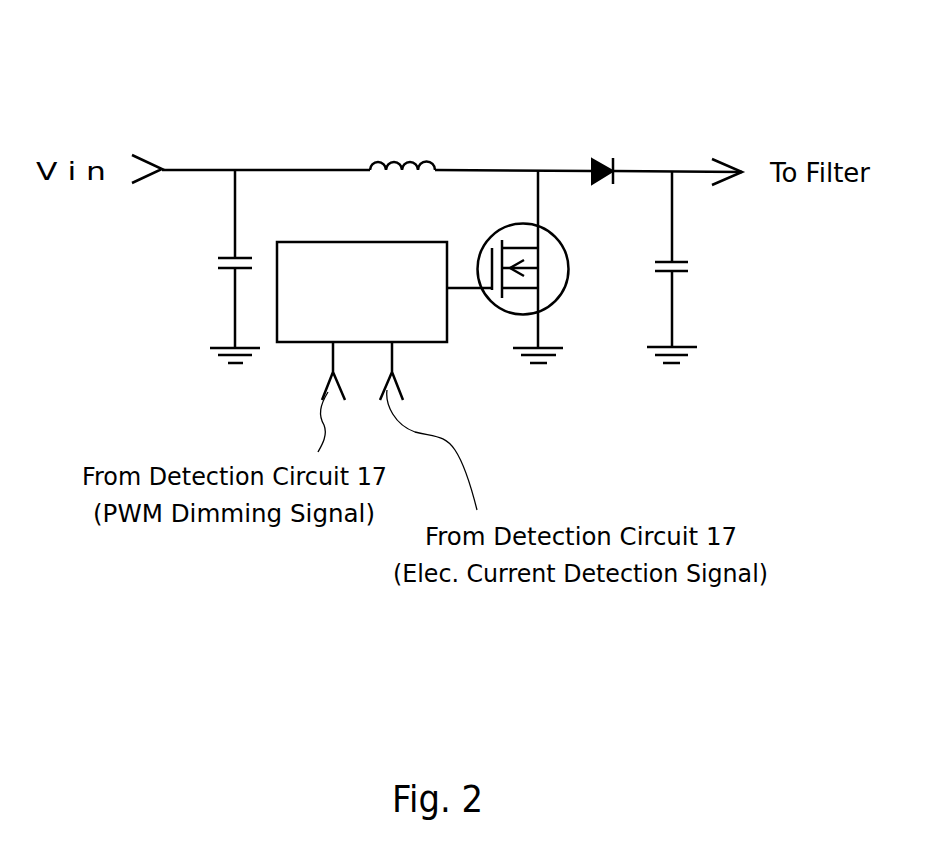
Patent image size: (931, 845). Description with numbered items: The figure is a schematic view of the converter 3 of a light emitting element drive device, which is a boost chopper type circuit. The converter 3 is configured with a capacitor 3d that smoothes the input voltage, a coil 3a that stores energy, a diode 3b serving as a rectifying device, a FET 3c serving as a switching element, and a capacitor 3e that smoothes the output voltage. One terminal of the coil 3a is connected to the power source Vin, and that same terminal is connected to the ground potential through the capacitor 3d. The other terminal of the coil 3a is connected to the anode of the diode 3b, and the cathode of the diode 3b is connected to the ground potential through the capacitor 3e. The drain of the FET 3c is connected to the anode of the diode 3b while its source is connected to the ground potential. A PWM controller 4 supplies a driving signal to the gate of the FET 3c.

The converter 3 is at (462, 113).
The coil 3a is at (402, 157).
The diode 3b is at (597, 158).
The FET 3c is at (507, 313).
The capacitor 3d is at (225, 268).
The capacitor 3e is at (680, 273).
The PWM controller 4 is at (450, 343).